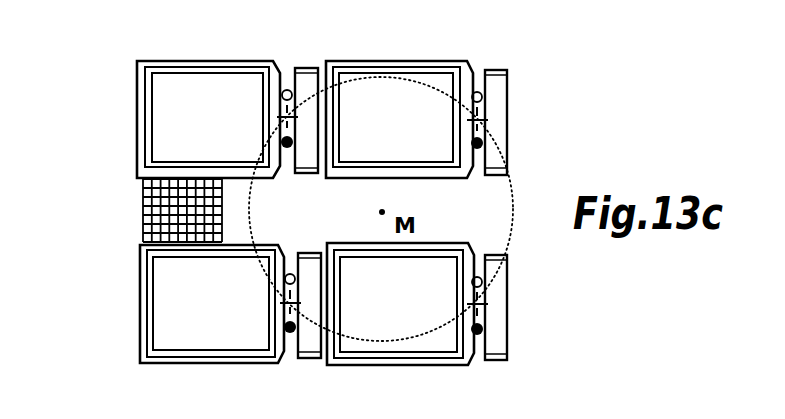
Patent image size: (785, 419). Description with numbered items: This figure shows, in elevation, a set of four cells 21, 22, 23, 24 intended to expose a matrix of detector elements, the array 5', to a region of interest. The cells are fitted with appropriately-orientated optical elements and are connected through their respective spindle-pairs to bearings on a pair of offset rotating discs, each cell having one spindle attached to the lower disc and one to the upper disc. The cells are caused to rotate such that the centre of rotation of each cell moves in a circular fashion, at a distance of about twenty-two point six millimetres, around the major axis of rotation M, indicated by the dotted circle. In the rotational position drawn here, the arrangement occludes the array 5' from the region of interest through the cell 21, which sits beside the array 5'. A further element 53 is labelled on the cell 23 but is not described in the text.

The cell 21 is at (137, 100).
The cell 22 is at (413, 62).
The cell 23 is at (432, 365).
The cell 24 is at (238, 363).
The connector strip 53 is at (505, 289).
The array 5' is at (126, 196).